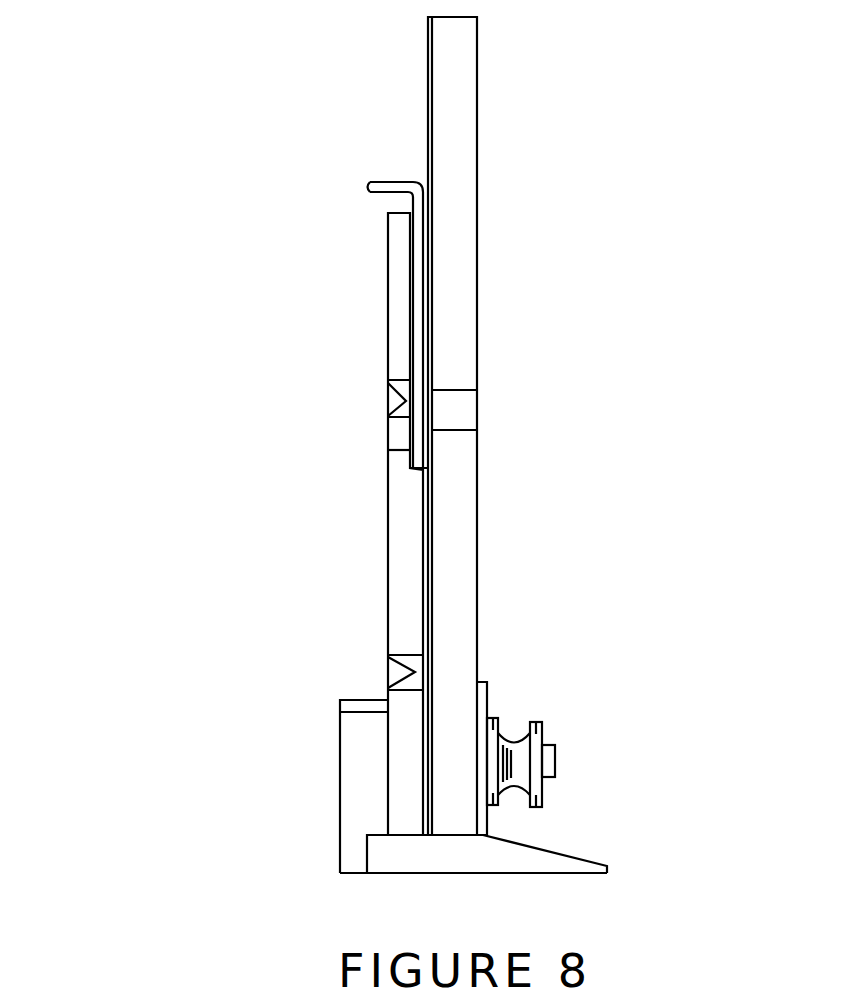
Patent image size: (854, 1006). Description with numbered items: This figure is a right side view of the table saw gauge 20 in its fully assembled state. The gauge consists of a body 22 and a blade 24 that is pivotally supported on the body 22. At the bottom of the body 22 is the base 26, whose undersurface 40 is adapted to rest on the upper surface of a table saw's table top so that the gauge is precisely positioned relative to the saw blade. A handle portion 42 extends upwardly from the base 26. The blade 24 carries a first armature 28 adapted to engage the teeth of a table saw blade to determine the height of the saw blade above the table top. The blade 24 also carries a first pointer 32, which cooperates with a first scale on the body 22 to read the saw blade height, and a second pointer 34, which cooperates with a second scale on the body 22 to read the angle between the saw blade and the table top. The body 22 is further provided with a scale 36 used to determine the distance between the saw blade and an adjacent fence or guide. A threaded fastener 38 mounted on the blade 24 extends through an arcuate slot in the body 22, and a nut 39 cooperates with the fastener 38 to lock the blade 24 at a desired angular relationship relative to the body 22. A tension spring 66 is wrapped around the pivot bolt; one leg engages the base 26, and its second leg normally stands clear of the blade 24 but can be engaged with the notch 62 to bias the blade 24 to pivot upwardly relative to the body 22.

The table saw gauge 20 is at (493, 118).
The body 22 is at (453, 322).
The blade 24 is at (380, 345).
The base 26 is at (418, 833).
The first armature 28 is at (340, 750).
The first pointer 32 is at (387, 676).
The second pointer 34 is at (387, 400).
The scale 36 is at (547, 847).
The threaded fastener 38 is at (550, 743).
The nut 39 is at (513, 735).
The undersurface 40 is at (400, 875).
The handle portion 42 is at (452, 683).
The notch 62 is at (387, 457).
The tension spring 66 is at (400, 181).